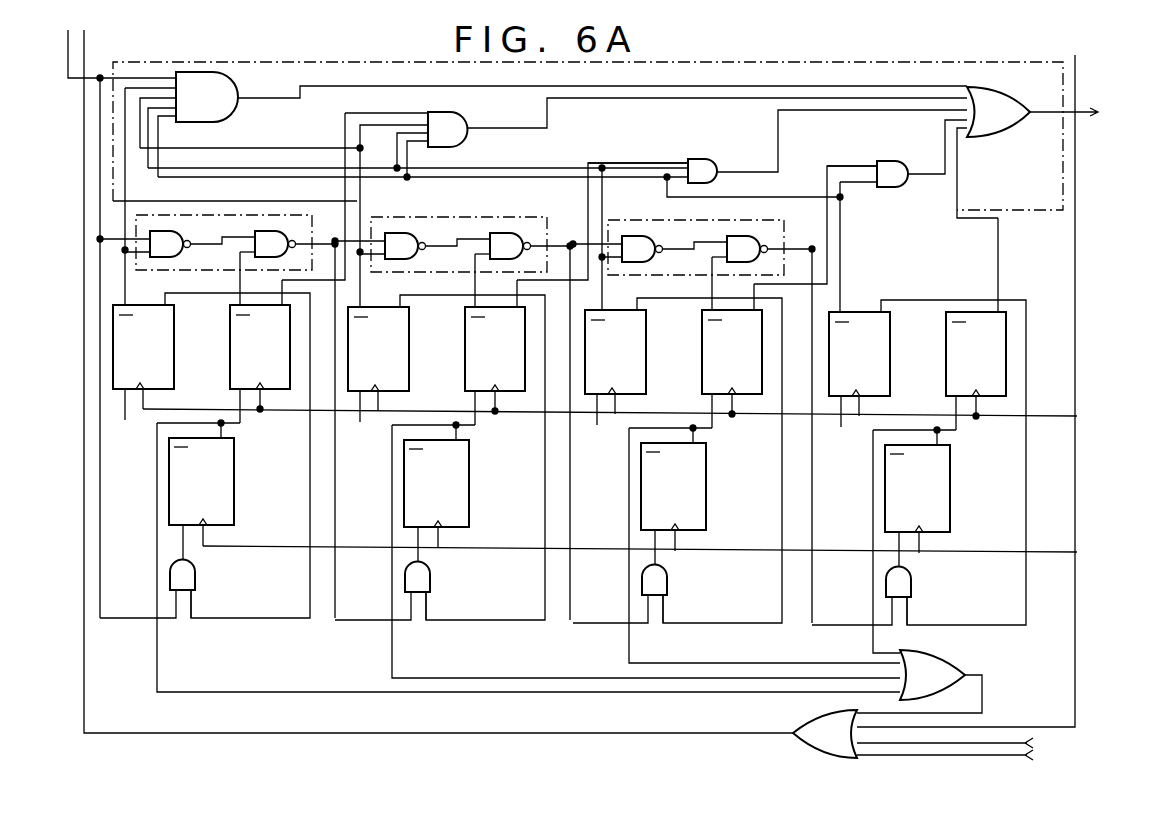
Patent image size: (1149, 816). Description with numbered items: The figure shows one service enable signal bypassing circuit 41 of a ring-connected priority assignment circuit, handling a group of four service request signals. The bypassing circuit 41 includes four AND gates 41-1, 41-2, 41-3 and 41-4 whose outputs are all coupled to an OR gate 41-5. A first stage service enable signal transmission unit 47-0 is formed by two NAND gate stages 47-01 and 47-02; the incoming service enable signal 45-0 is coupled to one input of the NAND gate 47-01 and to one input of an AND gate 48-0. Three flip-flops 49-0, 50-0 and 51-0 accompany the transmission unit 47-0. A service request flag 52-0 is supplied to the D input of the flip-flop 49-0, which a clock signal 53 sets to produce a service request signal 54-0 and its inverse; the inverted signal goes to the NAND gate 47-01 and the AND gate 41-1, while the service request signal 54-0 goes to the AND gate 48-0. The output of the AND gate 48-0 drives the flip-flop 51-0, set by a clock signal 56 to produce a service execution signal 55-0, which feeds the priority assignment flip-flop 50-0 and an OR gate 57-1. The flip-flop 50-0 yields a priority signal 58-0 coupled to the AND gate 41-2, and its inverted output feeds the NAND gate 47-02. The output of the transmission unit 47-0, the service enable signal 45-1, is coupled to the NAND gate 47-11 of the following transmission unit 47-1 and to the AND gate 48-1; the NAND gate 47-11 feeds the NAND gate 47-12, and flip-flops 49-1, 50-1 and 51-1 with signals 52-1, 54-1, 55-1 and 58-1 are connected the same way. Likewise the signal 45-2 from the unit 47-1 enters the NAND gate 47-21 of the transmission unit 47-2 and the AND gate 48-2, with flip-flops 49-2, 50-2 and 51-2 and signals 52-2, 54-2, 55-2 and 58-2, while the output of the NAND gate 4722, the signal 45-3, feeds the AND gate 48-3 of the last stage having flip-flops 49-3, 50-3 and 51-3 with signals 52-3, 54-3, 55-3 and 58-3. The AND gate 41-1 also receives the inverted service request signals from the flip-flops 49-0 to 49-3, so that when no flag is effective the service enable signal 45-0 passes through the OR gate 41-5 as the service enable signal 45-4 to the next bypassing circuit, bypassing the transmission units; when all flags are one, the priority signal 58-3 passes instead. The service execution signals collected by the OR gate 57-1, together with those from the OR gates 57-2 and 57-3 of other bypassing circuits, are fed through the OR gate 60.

The bypassing circuit 41 is at (112, 156).
The AND gate 41-1 is at (226, 92).
The AND gate 41-2 is at (450, 122).
The AND gate 41-3 is at (700, 160).
The AND gate 41-4 is at (893, 170).
The OR gate 41-5 is at (993, 133).
The service enable signal 45-0 is at (67, 70).
The service enable signal 45-1 is at (327, 240).
The service enable signal 45-2 is at (552, 400).
The service enable signal 45-3 is at (830, 422).
The service enable signal 45-4 is at (1102, 101).
The first stage service enable signal transmission unit 47-0 is at (224, 243).
The transmission unit 47-1 is at (459, 245).
The transmission unit 47-2 is at (696, 248).
The NAND gate 47-01 is at (167, 250).
The NAND gate 47-02 is at (270, 250).
The NAND gate 47-11 is at (381, 220).
The NAND gate 47-12 is at (483, 220).
The NAND gate 47-21 is at (618, 224).
The NAND gate 4722 is at (742, 220).
The AND gate 48-0 is at (186, 574).
The AND gate 48-1 is at (418, 591).
The AND gate 48-2 is at (655, 594).
The AND gate 48-3 is at (897, 596).
The flip-flop 49-0 is at (153, 352).
The flip-flop 49-1 is at (405, 279).
The flip-flop 49-2 is at (642, 292).
The flip-flop 49-3 is at (886, 299).
The priority assignment flip-flop 50-0 is at (238, 350).
The flip-flop 50-1 is at (470, 339).
The flip-flop 50-2 is at (707, 342).
The flip-flop 50-3 is at (951, 324).
The flip-flop 51-0 is at (222, 500).
The flip-flop 51-1 is at (461, 492).
The flip-flop 51-2 is at (698, 495).
The flip-flop 51-3 is at (942, 497).
The service request flag 52-0 is at (127, 419).
The service request flag 52-1 is at (362, 421).
The service request flag 52-2 is at (599, 424).
The service request flag 52-3 is at (843, 426).
The clock signal 53 is at (627, 409).
The service request signal 54-0 is at (237, 443).
The service request signal 54-1 is at (472, 445).
The service request signal 54-2 is at (709, 448).
The service request signal 54-3 is at (953, 450).
The service execution signal 55-0 is at (501, 557).
The service execution signal 55-1 is at (619, 551).
The service execution signal 55-2 is at (737, 545).
The service execution signal 55-3 is at (859, 541).
The clock signal 56 is at (657, 545).
The OR gate 57-1 is at (943, 668).
The OR gate 57-2 is at (970, 762).
The OR gate 57-3 is at (970, 745).
The priority signal 58-0 is at (325, 283).
The priority signal 58-1 is at (602, 264).
The priority signal 58-2 is at (815, 267).
The priority signal 58-3 is at (1005, 213).
The OR gate 60 is at (816, 726).